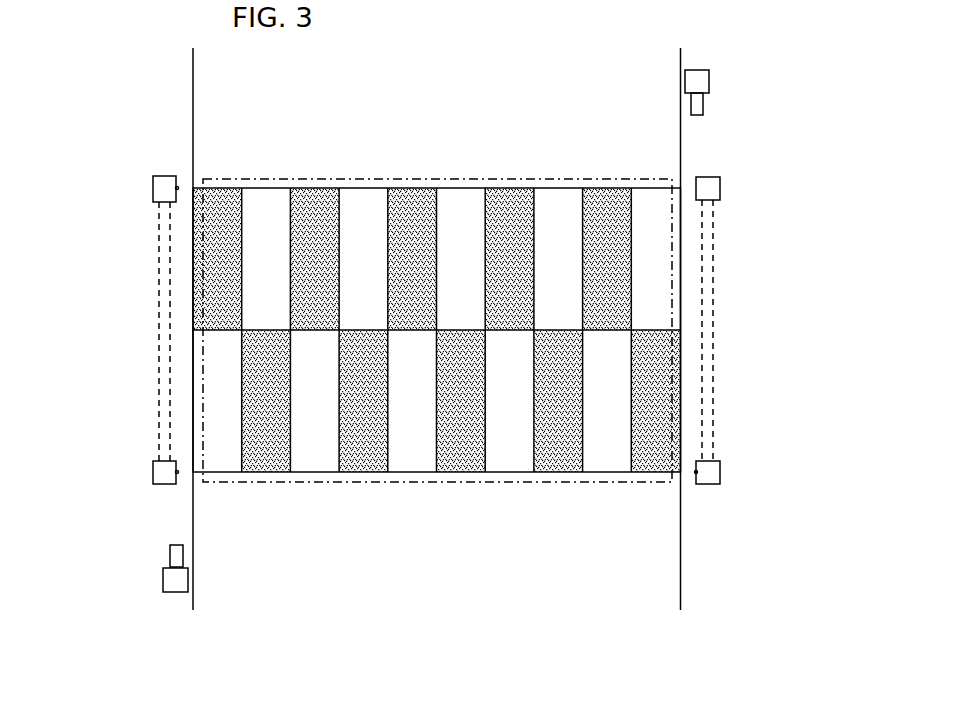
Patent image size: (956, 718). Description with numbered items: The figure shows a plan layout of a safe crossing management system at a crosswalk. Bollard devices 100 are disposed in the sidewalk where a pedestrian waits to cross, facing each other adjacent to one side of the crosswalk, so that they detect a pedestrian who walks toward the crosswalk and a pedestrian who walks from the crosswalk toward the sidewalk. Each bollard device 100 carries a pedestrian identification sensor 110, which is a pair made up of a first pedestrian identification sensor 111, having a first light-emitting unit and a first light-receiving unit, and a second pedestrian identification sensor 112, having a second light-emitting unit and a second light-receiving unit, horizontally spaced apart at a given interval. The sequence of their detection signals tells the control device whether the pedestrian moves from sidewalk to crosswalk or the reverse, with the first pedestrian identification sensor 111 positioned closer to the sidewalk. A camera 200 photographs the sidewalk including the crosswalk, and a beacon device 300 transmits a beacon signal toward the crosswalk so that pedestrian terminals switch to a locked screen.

The bollard device 100 is at (146, 476).
The pedestrian identification sensor 110 is at (439, 331).
The first pedestrian identification sensor 111 is at (160, 461).
The second pedestrian identification sensor 112 is at (172, 460).
The camera 200 is at (703, 103).
The beacon device 300 is at (697, 186).